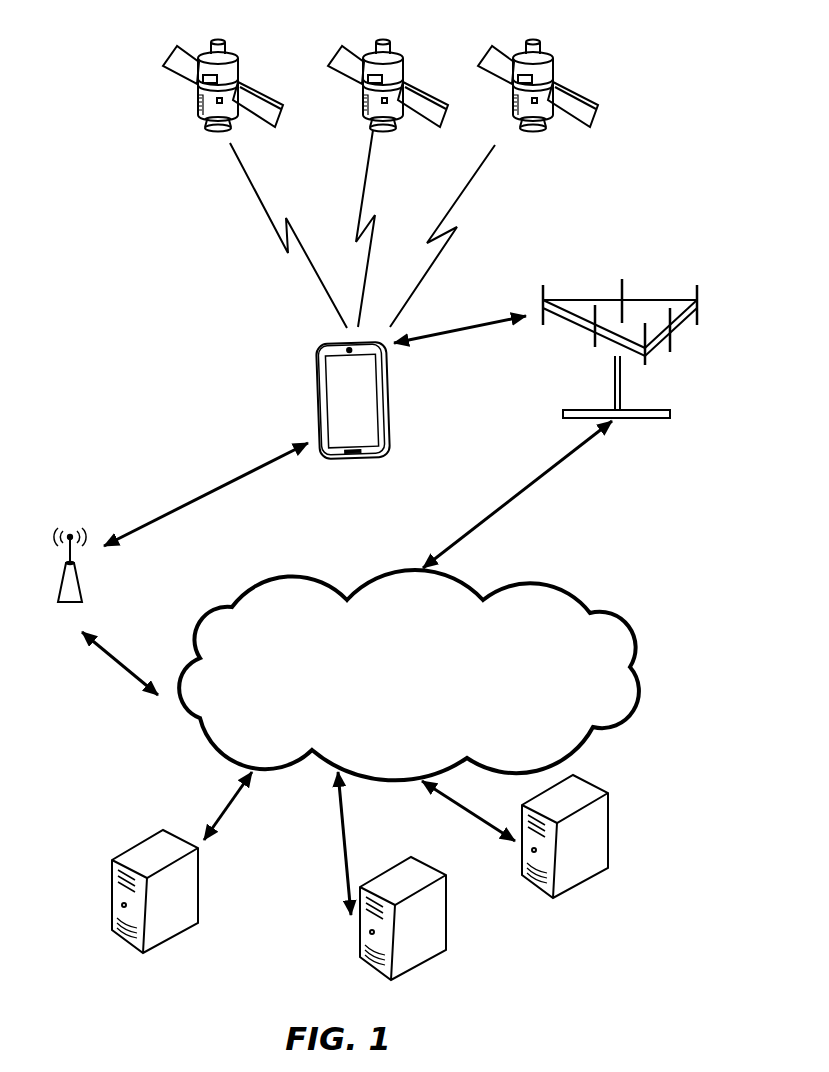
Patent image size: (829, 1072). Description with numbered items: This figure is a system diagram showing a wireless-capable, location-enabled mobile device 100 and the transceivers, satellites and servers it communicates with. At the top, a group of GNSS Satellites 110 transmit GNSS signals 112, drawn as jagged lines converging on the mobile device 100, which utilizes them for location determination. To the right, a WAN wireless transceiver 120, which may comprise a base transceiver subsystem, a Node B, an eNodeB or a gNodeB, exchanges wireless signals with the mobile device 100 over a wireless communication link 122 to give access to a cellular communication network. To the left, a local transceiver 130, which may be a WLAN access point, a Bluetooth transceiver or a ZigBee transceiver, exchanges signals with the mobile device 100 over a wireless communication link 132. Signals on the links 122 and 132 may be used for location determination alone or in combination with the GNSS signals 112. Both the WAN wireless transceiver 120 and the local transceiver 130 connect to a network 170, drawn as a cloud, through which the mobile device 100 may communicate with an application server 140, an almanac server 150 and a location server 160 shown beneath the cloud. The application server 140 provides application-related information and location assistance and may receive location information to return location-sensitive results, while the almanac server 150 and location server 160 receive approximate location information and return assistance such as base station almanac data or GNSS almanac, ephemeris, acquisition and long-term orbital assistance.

The mobile device 100 is at (320, 410).
The GNSS Satellites 110 is at (317, 76).
The GNSS signals 112 is at (362, 208).
The WAN wireless transceiver 120 is at (665, 420).
The wireless communication link 122 is at (455, 334).
The local transceiver 130 is at (78, 604).
The wireless communication link 132 is at (187, 505).
The application server 140 is at (608, 830).
The almanac server 150 is at (446, 905).
The location server 160 is at (198, 880).
The network 170 is at (630, 730).